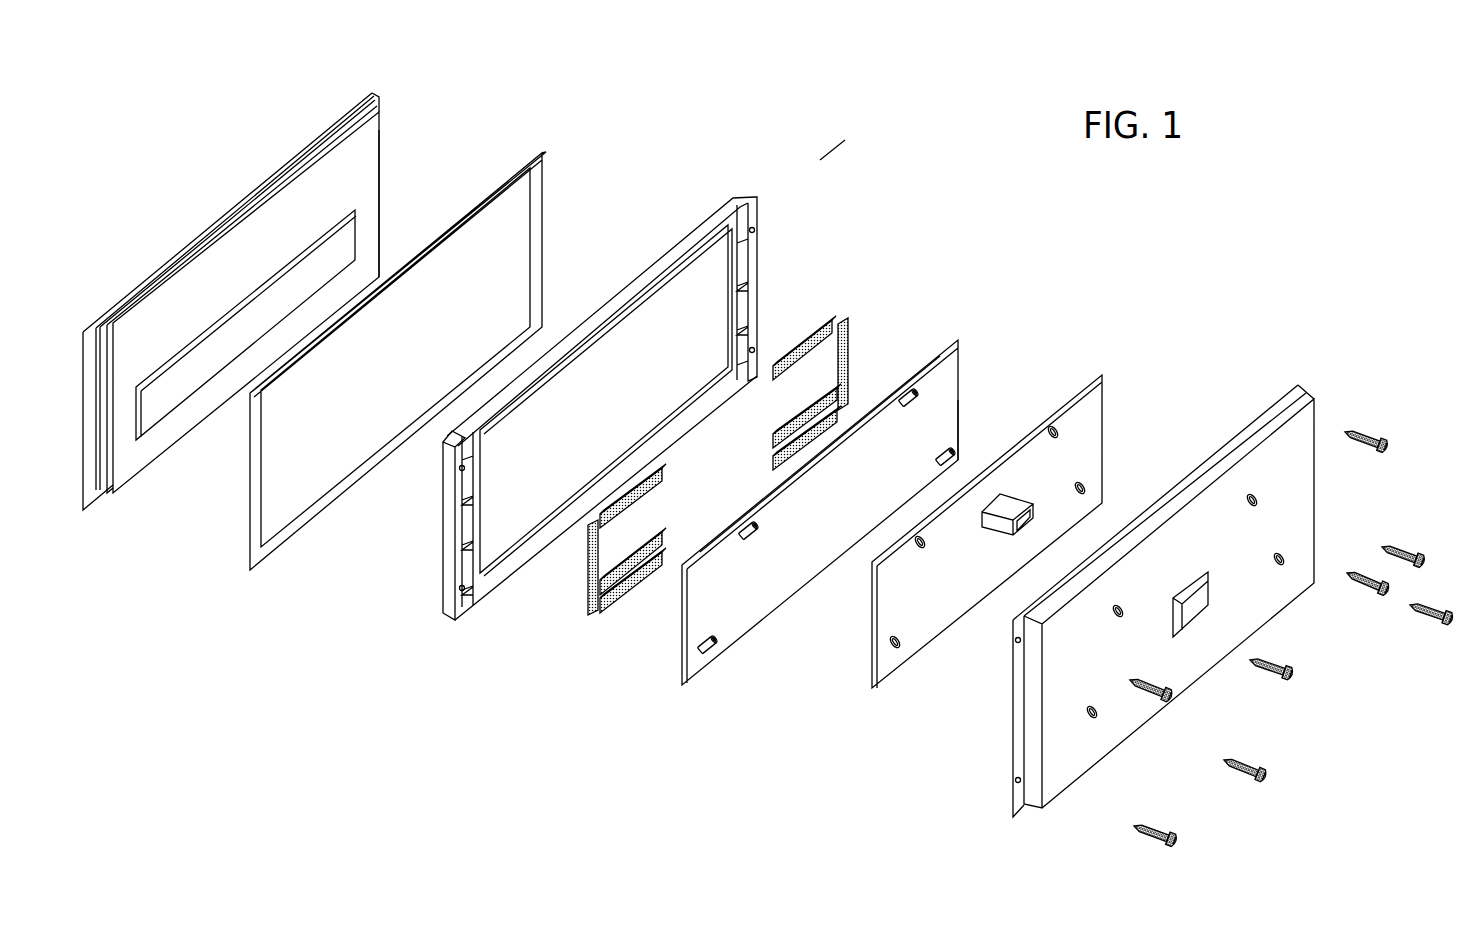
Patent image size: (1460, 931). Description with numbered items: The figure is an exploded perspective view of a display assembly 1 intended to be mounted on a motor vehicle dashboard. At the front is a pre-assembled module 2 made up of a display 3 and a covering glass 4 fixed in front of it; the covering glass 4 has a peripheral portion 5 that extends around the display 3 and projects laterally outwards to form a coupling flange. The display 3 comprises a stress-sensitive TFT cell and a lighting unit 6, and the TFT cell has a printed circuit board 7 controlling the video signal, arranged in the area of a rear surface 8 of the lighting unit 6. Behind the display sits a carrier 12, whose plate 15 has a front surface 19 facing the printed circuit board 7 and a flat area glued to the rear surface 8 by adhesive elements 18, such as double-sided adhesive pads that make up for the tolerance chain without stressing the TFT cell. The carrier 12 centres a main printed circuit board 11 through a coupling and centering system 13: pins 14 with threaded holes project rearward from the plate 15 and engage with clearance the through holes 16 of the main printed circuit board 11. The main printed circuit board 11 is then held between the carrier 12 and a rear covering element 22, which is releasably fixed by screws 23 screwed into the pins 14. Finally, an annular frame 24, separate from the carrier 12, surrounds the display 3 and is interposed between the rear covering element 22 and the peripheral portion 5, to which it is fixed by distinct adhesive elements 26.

The display assembly 1 is at (823, 164).
The pre-assembled module 2 is at (380, 91).
The display 3 is at (385, 108).
The covering glass 4 is at (350, 99).
The peripheral portion 5 is at (370, 93).
The lighting unit 6 is at (342, 160).
The printed circuit board 7 is at (348, 232).
The rear surface 8 is at (375, 250).
The main printed circuit board 11 is at (1103, 378).
The carrier 12 is at (951, 415).
The coupling and centering system 13 is at (955, 444).
The pins 14 is at (912, 391).
The plate 15 is at (838, 445).
The through holes 16 is at (1086, 492).
The adhesive elements 18 is at (846, 318).
The front surface 19 is at (770, 487).
The rear covering element 22 is at (1064, 763).
The screws 23 is at (1262, 762).
The frame 24 is at (740, 196).
The adhesive elements 26 is at (543, 173).